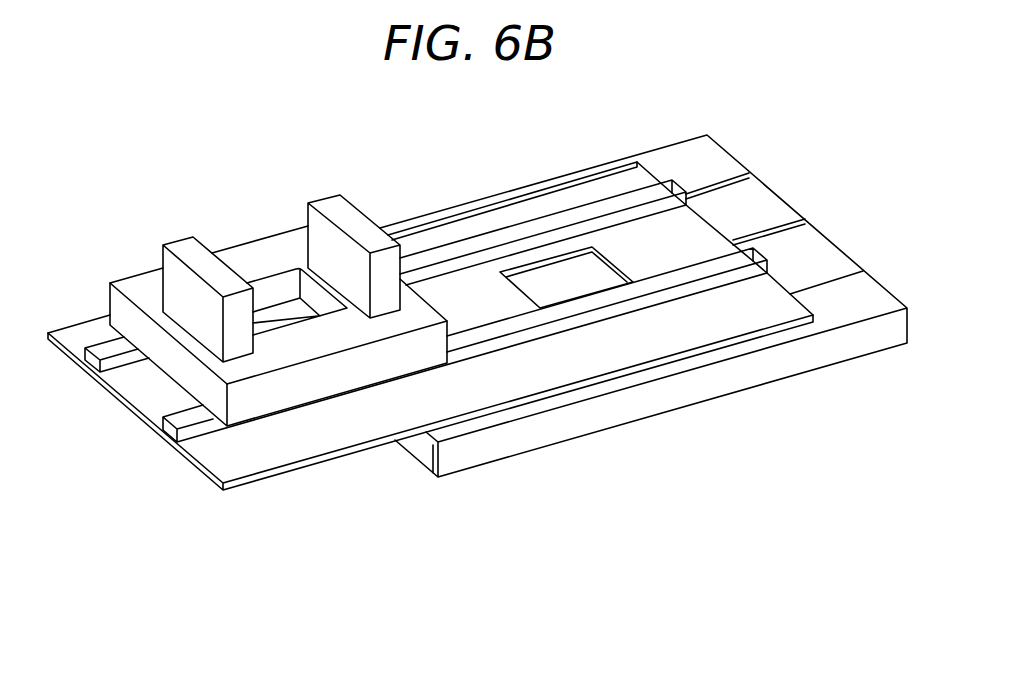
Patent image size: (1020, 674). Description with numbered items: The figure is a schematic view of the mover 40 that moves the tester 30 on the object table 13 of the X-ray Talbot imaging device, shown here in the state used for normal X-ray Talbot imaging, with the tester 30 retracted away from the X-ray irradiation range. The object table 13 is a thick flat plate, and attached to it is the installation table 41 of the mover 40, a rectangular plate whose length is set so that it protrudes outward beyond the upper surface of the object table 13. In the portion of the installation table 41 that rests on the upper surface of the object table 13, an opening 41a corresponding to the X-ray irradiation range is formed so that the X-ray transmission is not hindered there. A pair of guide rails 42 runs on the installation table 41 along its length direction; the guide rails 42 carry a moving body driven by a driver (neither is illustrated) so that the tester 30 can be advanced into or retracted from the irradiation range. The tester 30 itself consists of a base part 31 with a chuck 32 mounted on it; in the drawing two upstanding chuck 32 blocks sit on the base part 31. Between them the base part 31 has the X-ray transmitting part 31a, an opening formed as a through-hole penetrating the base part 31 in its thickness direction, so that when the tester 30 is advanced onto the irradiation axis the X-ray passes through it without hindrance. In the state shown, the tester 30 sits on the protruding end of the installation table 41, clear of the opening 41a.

The object table 13 is at (710, 164).
The tester 30 is at (243, 280).
The base part 31 is at (122, 298).
The X-ray transmitting part 31a is at (290, 280).
The chuck 32 is at (187, 252).
The mover 40 is at (430, 351).
The installation table 41 is at (430, 324).
The opening 41a is at (543, 265).
The guide rail 42 is at (598, 207).